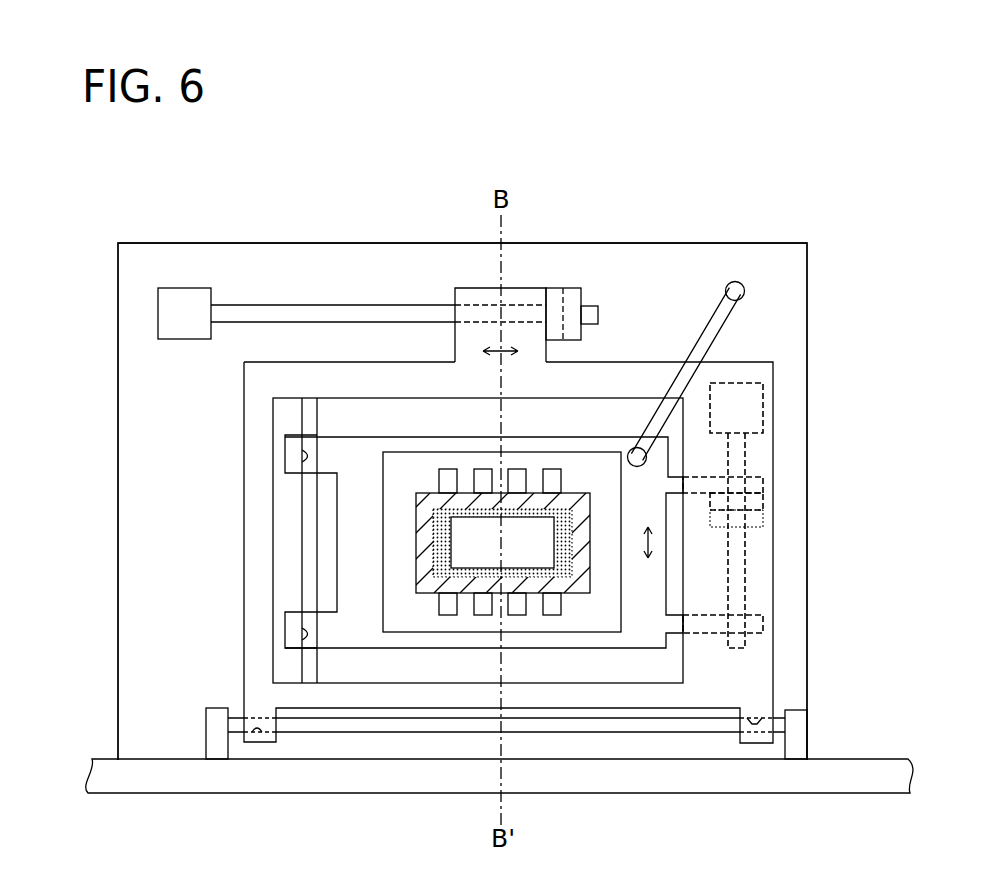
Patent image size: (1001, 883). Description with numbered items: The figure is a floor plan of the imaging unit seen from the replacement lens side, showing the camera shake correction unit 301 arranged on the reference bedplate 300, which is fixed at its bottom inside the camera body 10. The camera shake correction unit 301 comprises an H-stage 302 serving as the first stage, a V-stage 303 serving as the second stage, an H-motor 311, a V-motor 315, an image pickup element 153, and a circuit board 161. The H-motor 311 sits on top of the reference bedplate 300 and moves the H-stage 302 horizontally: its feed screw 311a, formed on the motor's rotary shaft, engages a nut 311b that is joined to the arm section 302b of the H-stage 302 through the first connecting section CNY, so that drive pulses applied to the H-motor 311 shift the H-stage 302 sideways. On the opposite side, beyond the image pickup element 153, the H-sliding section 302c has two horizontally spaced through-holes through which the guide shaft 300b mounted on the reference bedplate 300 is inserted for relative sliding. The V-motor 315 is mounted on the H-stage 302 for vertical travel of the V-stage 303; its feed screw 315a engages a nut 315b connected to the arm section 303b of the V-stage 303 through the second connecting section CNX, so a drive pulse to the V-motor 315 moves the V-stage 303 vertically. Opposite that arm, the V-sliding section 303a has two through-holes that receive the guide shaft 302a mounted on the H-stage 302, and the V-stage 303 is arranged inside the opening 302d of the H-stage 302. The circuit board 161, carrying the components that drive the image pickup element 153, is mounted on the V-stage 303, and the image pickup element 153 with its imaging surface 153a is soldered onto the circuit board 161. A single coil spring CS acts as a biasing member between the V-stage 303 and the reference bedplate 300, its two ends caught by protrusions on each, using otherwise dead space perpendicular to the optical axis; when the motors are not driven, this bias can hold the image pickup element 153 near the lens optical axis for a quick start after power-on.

The camera body 10 is at (788, 785).
The image pickup element 153 is at (580, 561).
The imaging surface 153a is at (468, 560).
The circuit board 161 is at (603, 625).
The reference bedplate 300 is at (808, 243).
The guide shaft 300b is at (778, 727).
The camera shake correction unit 301 is at (780, 198).
The H-stage 302 is at (763, 373).
The guide shaft 302a is at (302, 573).
The arm section 302b is at (528, 297).
The H-sliding section 302c is at (263, 732).
The opening 302d is at (343, 400).
The V-stage 303 is at (658, 452).
The V-sliding section 303a is at (303, 460).
The arm section 303b is at (763, 484).
The H-motor 311 is at (188, 297).
The feed screw 311a is at (362, 305).
The nut 311b is at (557, 288).
The V-motor 315 is at (763, 398).
The feed screw 315a is at (735, 600).
The nut 315b is at (763, 503).
The second connecting section CNX is at (775, 521).
The first connecting section CNY is at (594, 279).
The coil spring CS is at (715, 302).